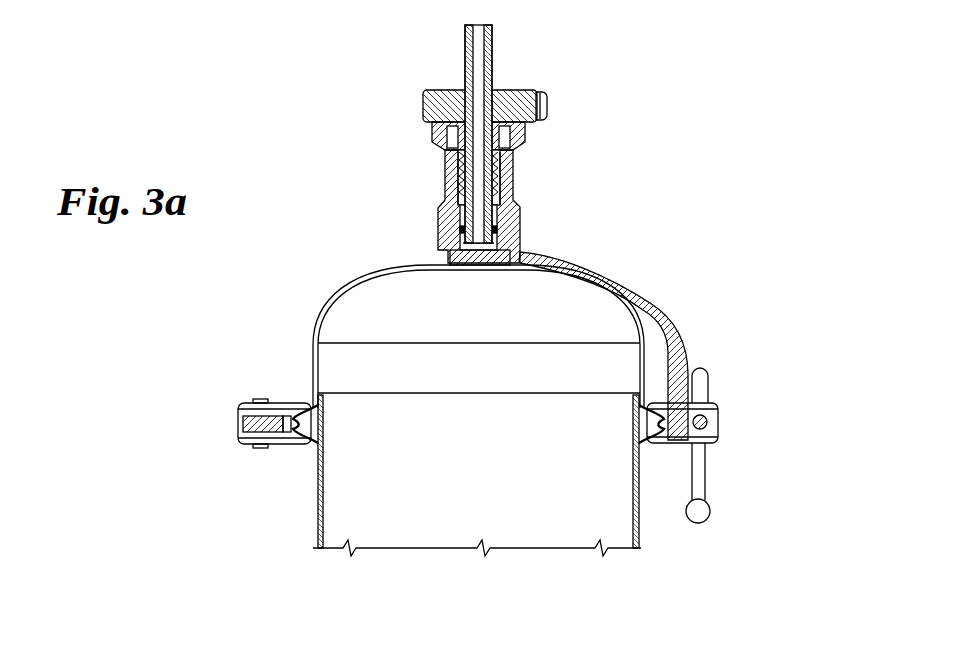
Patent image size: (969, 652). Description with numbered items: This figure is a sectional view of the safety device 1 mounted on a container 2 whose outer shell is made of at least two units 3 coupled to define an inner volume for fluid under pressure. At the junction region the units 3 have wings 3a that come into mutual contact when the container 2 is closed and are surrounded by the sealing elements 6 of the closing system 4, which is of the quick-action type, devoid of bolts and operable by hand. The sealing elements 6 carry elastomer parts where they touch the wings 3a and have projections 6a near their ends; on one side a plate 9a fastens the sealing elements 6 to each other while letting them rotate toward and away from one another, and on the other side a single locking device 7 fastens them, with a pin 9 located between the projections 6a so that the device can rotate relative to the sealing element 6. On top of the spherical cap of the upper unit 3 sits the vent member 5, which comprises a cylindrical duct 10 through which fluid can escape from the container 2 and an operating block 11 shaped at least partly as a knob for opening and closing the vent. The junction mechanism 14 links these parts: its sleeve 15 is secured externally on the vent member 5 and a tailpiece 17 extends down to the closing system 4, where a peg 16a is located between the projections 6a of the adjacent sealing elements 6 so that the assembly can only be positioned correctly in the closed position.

The safety device 1 is at (244, 150).
The container 2 is at (298, 293).
The unit 3 is at (334, 302).
The wing 3a is at (306, 430).
The closing system 4 is at (797, 361).
The vent member 5 is at (556, 88).
The sealing element 6 is at (294, 389).
The projection 6a is at (286, 436).
The locking device 7 is at (733, 392).
The pin 9 is at (258, 400).
The plate 9a is at (250, 425).
The cylindrical duct 10 is at (468, 67).
The operating block 11 is at (436, 104).
The junction mechanism 14 is at (708, 290).
The sleeve 15 is at (444, 215).
The peg 16a is at (708, 423).
The tailpiece 17 is at (603, 270).